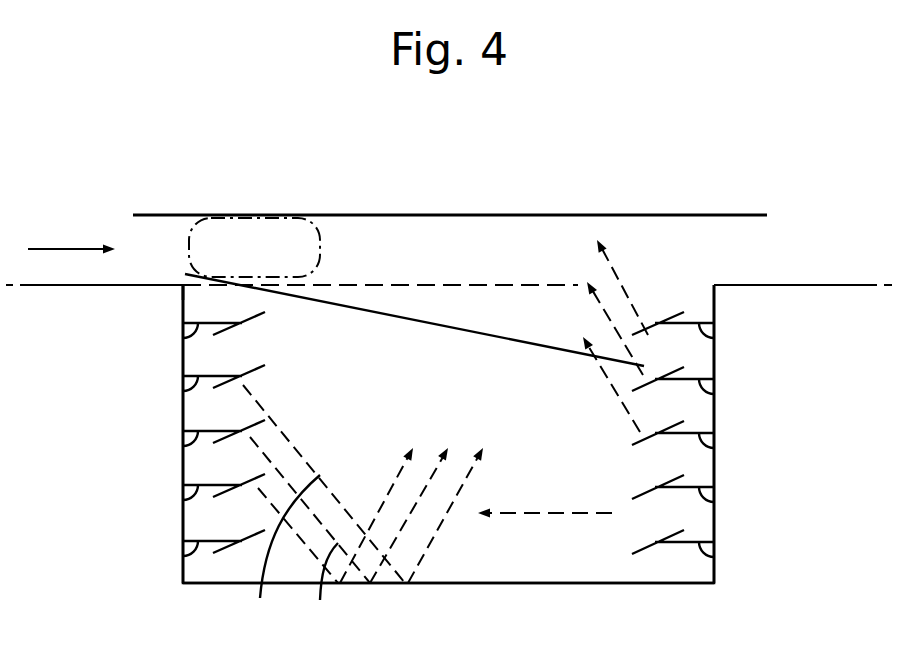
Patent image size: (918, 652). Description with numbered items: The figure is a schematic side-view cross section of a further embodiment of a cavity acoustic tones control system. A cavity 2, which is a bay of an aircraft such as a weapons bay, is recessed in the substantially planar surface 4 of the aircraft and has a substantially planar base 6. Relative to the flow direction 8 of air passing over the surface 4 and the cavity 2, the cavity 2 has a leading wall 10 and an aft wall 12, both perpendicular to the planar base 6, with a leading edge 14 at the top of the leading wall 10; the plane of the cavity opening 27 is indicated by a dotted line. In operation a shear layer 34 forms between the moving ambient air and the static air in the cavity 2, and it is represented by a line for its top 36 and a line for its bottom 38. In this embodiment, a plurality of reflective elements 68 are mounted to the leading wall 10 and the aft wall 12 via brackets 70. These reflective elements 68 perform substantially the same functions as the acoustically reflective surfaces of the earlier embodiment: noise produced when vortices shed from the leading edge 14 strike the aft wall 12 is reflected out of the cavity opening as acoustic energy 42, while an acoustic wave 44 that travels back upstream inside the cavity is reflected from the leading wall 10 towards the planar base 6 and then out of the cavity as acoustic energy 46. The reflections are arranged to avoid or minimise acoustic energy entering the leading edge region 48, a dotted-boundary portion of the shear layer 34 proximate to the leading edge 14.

The cavity 2 is at (577, 560).
The surface 4 is at (72, 287).
The planar base 6 is at (475, 584).
The flow direction 8 is at (56, 248).
The leading wall 10 is at (182, 421).
The aft wall 12 is at (715, 527).
The leading edge 14 is at (183, 281).
The plane of the cavity opening 27 is at (370, 285).
The shear layer 34 is at (434, 261).
The top of the shear layer 36 is at (463, 215).
The bottom of the shear layer 38 is at (467, 331).
The reflected acoustic energy 42 is at (606, 310).
The reflected acoustic wave 44 is at (531, 513).
The reflected acoustic energy 46 is at (303, 543).
The leading edge region 48 is at (313, 222).
The reflective elements 68 is at (263, 314).
The brackets 70 is at (183, 338).